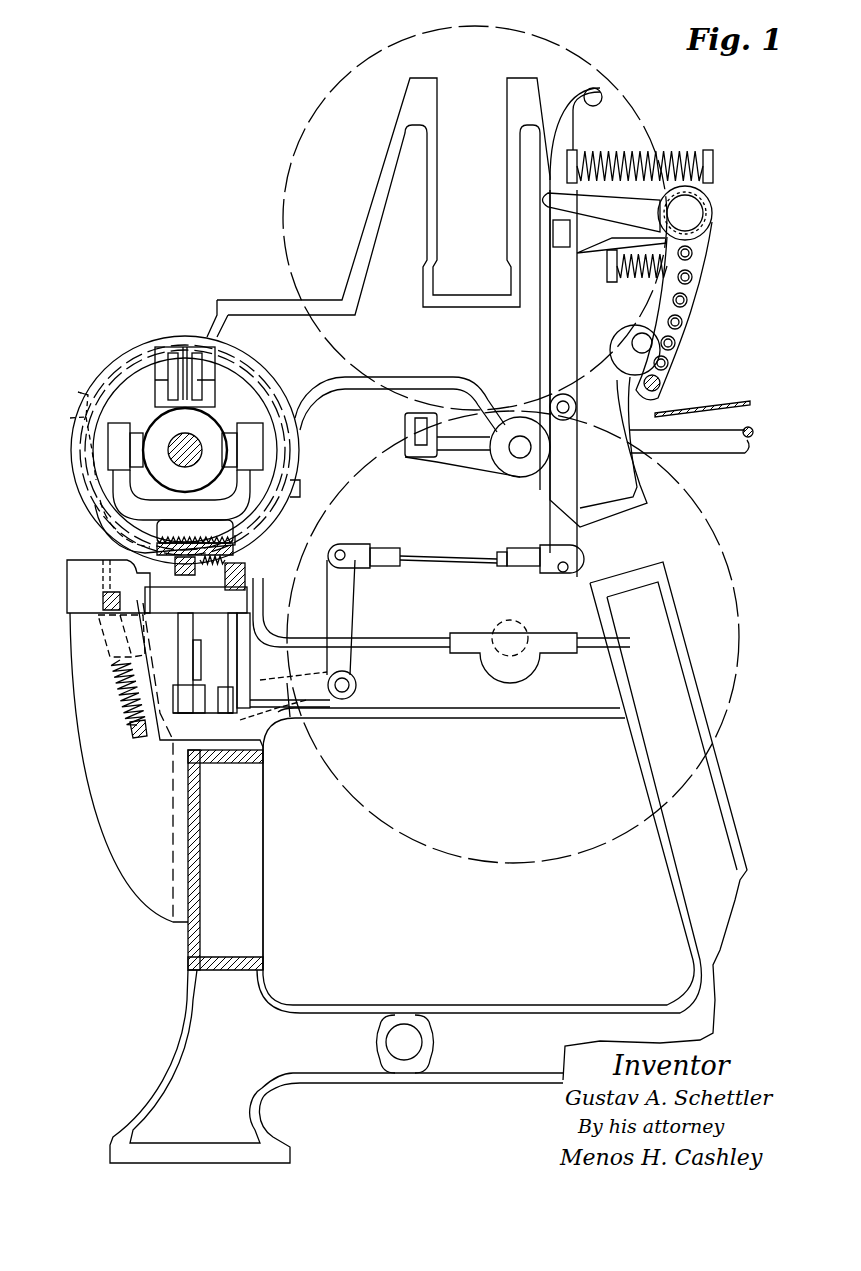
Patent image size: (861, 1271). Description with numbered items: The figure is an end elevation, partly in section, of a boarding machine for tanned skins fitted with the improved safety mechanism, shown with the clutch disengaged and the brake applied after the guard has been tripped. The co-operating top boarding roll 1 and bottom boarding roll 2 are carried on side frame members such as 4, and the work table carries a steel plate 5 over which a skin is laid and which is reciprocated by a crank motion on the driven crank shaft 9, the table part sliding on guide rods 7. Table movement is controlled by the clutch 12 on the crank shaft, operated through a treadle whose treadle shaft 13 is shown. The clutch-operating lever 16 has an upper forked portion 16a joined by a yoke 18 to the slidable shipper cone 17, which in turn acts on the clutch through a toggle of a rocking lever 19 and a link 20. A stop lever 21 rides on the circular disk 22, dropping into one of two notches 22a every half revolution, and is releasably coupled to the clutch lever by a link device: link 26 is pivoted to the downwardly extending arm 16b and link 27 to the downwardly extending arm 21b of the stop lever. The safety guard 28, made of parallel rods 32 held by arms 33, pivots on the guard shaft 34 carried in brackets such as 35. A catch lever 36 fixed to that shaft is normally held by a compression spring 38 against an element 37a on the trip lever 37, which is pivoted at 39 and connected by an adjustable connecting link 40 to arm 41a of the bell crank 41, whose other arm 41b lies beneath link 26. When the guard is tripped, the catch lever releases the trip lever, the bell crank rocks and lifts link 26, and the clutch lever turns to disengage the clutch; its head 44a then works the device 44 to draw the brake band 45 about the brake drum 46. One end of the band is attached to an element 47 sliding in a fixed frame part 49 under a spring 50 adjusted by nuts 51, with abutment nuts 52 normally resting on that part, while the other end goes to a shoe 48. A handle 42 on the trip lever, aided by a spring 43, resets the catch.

The top boarding roll 1 is at (362, 72).
The bottom boarding roll 2 is at (734, 548).
The side frame member 4 is at (683, 703).
The steel plate 5 is at (705, 408).
The guide rod 7 is at (744, 453).
The crank shaft 9 is at (200, 445).
The clutch 12 is at (104, 352).
The treadle shaft 13 is at (407, 1060).
The clutch-operating lever 16 is at (252, 596).
The upper forked portion 16a is at (145, 495).
The downwardly extending arm 16b is at (250, 660).
The shipper cone 17 is at (206, 425).
The yoke 18 is at (140, 425).
The rocking lever 19 is at (185, 347).
The link 20 is at (172, 355).
The stop lever 21 is at (180, 605).
The downwardly extending arm 21b is at (225, 680).
The circular disk 22 is at (72, 425).
The notch 22a is at (76, 394).
The link 26 is at (183, 668).
The link 27 is at (200, 713).
The safety guard 28 is at (700, 300).
The parallel rods 32 is at (695, 277).
The arms 33 is at (685, 322).
The guard shaft 34 is at (703, 213).
The bracket 35 is at (577, 253).
The catch lever 36 is at (560, 198).
The trip lever 37 is at (550, 360).
The element 37a is at (553, 232).
The compression spring 38 is at (662, 150).
The pivot 39 is at (570, 397).
The connecting link 40 is at (445, 557).
The bell crank 41 is at (357, 682).
The arm 41a is at (350, 615).
The arm 41b is at (295, 718).
The handle 42 is at (600, 90).
The spring 43 is at (632, 282).
The link or toggle device 44 is at (215, 600).
The head 44a is at (246, 578).
The brake band 45 is at (95, 540).
The brake drum 46 is at (300, 430).
The element 47 is at (100, 572).
The shoe 48 is at (162, 560).
The fixed part 49 is at (103, 640).
The spring 50 is at (125, 698).
The nuts 51 is at (130, 729).
The nuts 52 is at (100, 600).